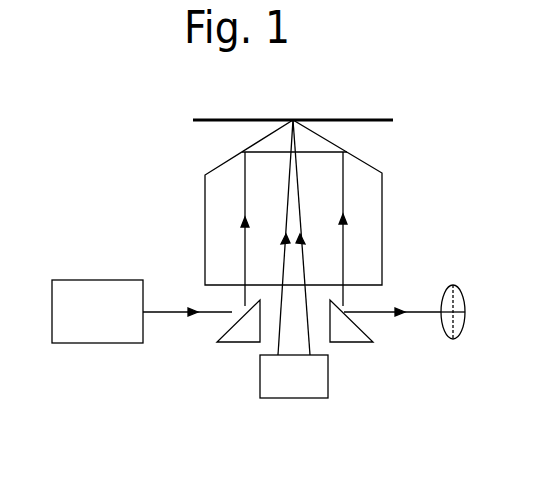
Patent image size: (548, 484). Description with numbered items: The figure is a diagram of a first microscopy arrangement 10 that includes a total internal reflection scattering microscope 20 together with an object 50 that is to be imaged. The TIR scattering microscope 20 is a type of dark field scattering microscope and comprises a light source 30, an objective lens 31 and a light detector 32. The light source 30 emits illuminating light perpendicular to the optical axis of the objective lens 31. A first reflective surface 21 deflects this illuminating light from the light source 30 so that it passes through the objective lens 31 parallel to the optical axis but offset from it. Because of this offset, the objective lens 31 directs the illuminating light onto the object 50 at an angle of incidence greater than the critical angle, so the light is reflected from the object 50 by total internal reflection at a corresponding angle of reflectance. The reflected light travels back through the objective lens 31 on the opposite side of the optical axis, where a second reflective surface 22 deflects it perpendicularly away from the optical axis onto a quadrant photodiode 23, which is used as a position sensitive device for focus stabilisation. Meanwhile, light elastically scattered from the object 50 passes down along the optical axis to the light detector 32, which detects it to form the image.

The first microscopy arrangement 10 is at (112, 218).
The total internal reflection (TIR) scattering microscope 20 is at (288, 237).
The first reflective surface 21 is at (221, 332).
The second reflective surface 22 is at (367, 330).
The quadrant photodiode (QPD) 23 is at (442, 298).
The light source 30 is at (77, 343).
The objective lens 31 is at (372, 212).
The light detector 32 is at (261, 388).
The object 50 is at (342, 118).